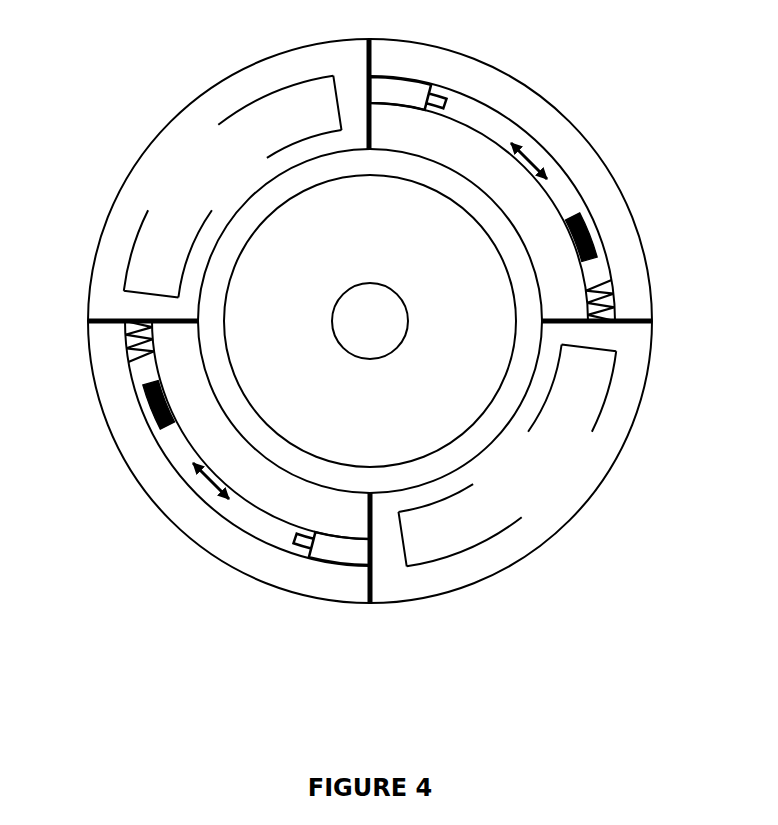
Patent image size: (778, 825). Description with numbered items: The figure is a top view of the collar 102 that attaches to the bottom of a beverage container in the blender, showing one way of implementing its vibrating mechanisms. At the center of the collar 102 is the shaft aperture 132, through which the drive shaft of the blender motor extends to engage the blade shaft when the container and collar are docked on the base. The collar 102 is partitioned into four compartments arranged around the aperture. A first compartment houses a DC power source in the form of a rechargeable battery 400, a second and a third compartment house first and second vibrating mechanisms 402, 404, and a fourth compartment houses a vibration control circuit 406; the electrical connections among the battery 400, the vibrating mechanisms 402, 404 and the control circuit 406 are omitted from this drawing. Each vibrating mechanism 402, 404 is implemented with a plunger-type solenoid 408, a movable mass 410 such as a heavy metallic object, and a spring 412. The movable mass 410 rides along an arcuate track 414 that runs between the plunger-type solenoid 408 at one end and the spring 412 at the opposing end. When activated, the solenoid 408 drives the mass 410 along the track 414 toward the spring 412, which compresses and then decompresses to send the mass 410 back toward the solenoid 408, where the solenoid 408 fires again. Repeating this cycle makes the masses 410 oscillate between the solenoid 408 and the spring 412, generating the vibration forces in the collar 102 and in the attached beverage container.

The collar 102 is at (658, 567).
The shaft aperture 132 is at (405, 292).
The rechargeable battery 400 is at (270, 129).
The first vibrating mechanism 402 is at (587, 104).
The second vibrating mechanism 404 is at (148, 542).
The vibration control circuit 406 is at (556, 411).
The plunger-type solenoid 408 is at (405, 93).
The movable mass 410 is at (588, 230).
The spring 412 is at (615, 296).
The arcuate track 414 is at (475, 118).